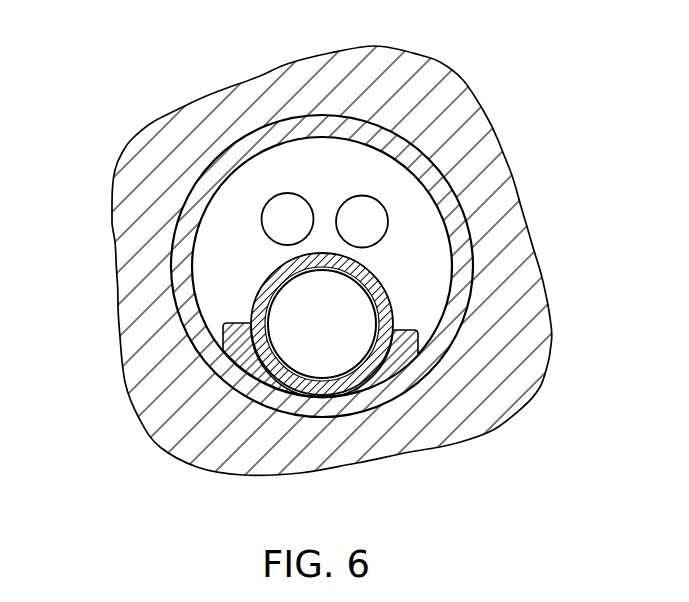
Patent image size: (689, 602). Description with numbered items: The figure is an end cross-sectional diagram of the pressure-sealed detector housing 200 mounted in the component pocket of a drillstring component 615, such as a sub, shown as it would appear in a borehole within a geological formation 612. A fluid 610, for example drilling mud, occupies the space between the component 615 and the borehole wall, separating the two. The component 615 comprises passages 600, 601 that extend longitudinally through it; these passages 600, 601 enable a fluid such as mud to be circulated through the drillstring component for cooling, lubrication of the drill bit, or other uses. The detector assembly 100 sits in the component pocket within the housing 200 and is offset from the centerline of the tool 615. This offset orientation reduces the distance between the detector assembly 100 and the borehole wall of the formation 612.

The geological formation 612 is at (443, 98).
The fluid 610 is at (450, 335).
The drillstring component 615 is at (430, 287).
The passage 601 is at (278, 218).
The passage 600 is at (373, 220).
The detector assembly 100 is at (291, 348).
The pressure-sealed detector housing 200 is at (333, 402).